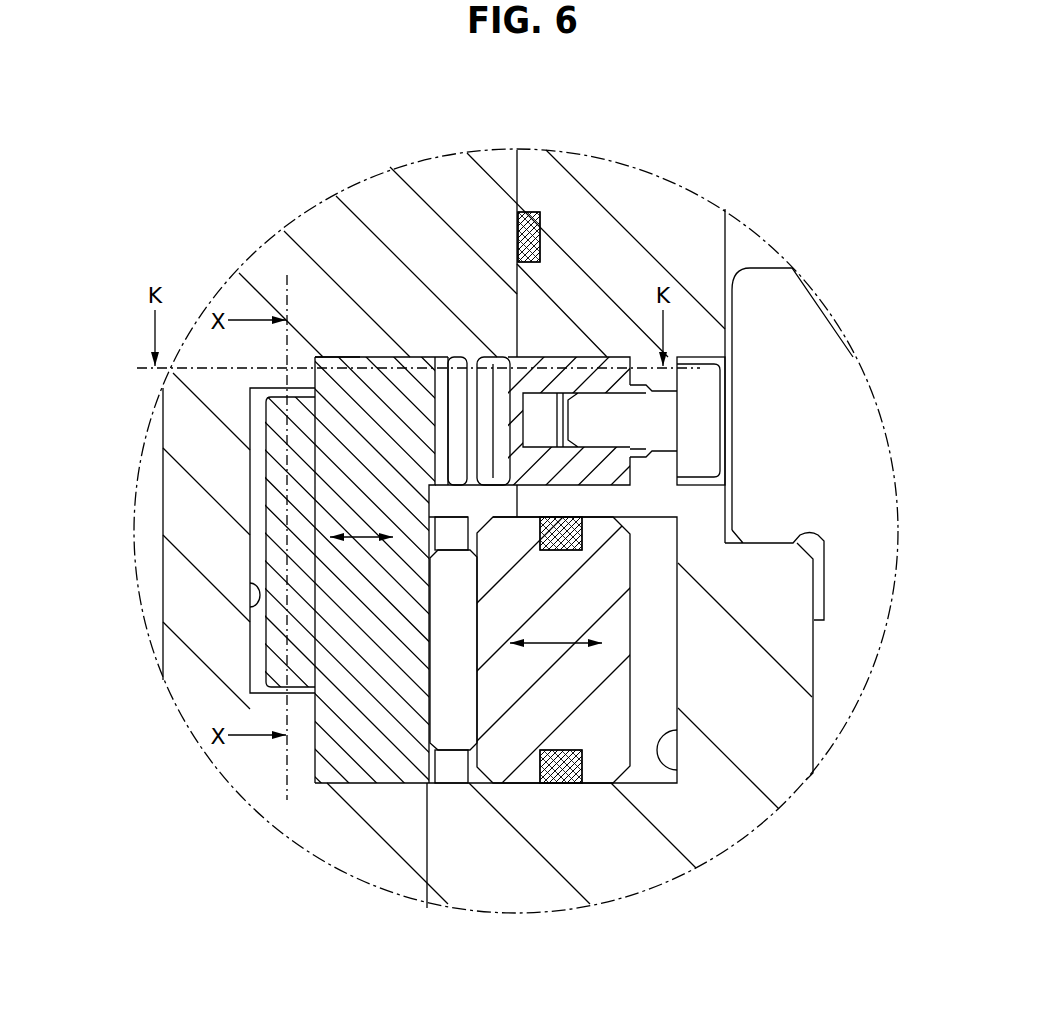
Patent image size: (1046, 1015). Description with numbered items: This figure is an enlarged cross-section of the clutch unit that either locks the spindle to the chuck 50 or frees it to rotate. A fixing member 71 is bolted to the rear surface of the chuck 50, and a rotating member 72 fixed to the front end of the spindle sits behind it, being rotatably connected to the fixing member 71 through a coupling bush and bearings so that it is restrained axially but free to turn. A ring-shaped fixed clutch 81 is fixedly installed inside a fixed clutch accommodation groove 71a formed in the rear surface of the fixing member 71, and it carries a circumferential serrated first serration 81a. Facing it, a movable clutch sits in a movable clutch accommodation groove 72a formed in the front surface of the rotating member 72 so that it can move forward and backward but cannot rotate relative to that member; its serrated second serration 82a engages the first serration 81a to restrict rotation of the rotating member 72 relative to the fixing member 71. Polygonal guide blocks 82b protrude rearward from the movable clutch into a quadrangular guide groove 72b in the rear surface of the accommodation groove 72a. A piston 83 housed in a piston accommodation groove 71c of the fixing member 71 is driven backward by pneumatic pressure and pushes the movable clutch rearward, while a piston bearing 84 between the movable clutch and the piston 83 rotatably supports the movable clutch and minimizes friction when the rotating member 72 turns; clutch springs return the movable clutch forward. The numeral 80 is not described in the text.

The chuck 50 is at (787, 340).
The fixing member 71 is at (760, 672).
The fixed clutch accommodation groove 71a is at (615, 357).
The piston accommodation groove 71c is at (682, 775).
The rotating member 72 is at (188, 515).
The movable clutch accommodation groove 72a is at (355, 357).
The guide groove 72b is at (253, 597).
The slider block 80 is at (386, 357).
The fixed clutch 81 is at (573, 357).
The first serration 81a is at (497, 357).
The second serration 82a is at (443, 357).
The guide blocks 82b is at (280, 442).
The piston 83 is at (597, 750).
The piston bearing 84 is at (455, 720).